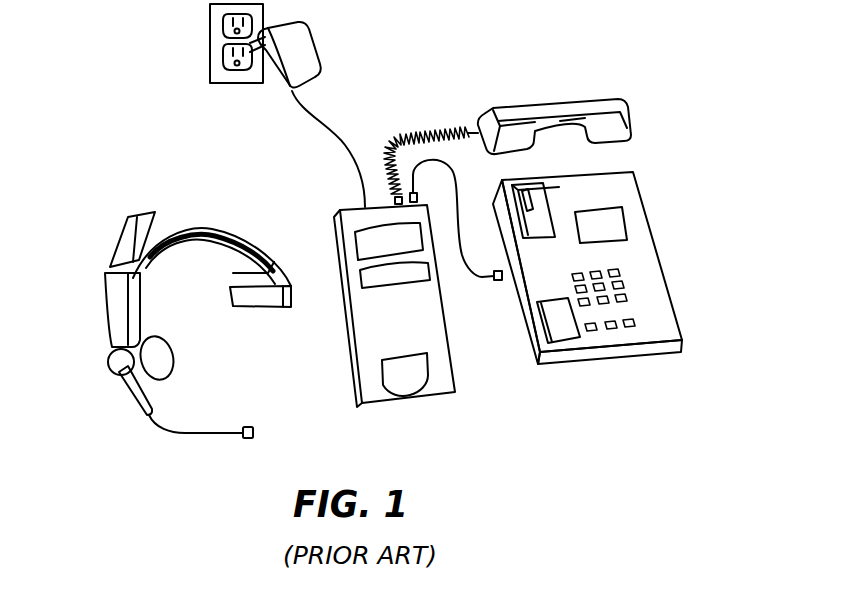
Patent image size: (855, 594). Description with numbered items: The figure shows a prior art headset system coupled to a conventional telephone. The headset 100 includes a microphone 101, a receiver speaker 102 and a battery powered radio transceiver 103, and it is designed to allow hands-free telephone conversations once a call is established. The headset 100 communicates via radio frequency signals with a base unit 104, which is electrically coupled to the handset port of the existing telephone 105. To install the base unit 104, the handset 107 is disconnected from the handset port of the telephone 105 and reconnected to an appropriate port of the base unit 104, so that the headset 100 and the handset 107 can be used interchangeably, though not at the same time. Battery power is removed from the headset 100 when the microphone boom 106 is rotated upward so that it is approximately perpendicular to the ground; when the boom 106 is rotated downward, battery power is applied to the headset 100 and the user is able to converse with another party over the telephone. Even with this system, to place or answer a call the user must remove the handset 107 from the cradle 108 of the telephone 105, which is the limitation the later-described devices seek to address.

The headset 100 is at (157, 177).
The microphone 101 is at (249, 440).
The receiver speaker 102 is at (174, 350).
The transceiver 103 is at (103, 307).
The base unit 104 is at (432, 398).
The telephone 105 is at (674, 307).
The microphone boom 106 is at (137, 403).
The handset 107 is at (565, 100).
The cradle 108 is at (552, 318).